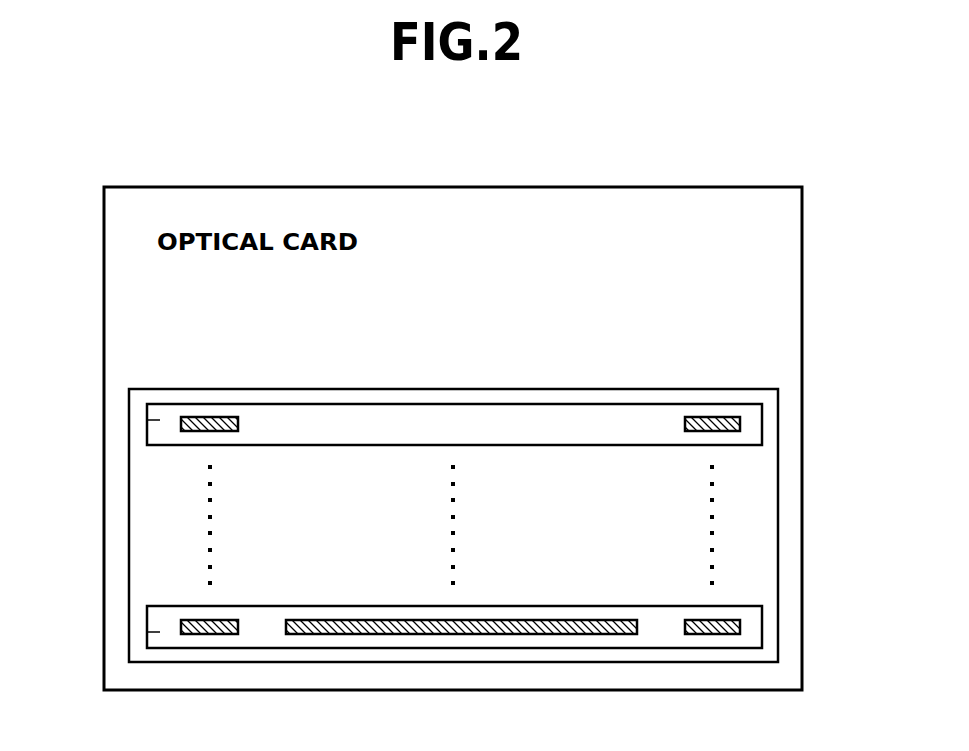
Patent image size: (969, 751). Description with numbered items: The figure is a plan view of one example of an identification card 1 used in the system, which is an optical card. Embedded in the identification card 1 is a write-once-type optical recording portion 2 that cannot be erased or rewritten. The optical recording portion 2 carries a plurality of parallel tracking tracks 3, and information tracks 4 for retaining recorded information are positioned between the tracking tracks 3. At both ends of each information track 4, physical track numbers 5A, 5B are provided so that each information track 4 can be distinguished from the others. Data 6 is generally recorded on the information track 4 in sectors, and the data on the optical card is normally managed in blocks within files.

The identification card 1 is at (729, 187).
The optical recording portion 2 is at (733, 389).
The tracking tracks 3 is at (766, 404).
The information tracks 4 is at (160, 420).
The physical track number 5A is at (228, 417).
The physical track number 5B is at (690, 417).
The data 6 is at (357, 620).